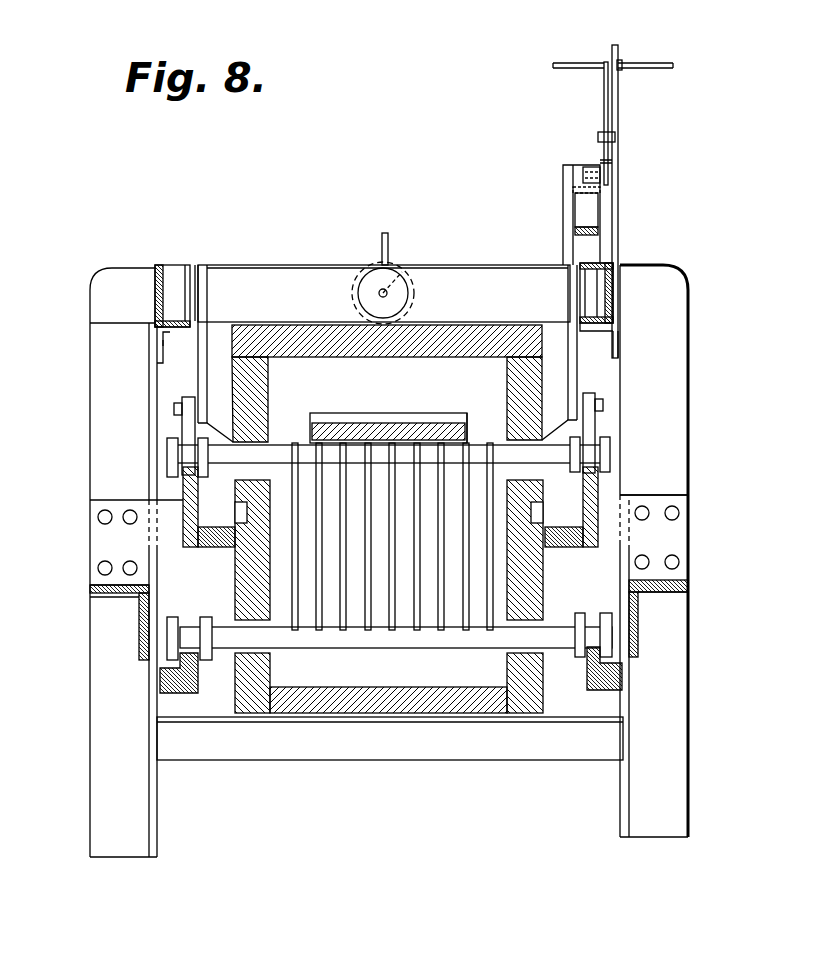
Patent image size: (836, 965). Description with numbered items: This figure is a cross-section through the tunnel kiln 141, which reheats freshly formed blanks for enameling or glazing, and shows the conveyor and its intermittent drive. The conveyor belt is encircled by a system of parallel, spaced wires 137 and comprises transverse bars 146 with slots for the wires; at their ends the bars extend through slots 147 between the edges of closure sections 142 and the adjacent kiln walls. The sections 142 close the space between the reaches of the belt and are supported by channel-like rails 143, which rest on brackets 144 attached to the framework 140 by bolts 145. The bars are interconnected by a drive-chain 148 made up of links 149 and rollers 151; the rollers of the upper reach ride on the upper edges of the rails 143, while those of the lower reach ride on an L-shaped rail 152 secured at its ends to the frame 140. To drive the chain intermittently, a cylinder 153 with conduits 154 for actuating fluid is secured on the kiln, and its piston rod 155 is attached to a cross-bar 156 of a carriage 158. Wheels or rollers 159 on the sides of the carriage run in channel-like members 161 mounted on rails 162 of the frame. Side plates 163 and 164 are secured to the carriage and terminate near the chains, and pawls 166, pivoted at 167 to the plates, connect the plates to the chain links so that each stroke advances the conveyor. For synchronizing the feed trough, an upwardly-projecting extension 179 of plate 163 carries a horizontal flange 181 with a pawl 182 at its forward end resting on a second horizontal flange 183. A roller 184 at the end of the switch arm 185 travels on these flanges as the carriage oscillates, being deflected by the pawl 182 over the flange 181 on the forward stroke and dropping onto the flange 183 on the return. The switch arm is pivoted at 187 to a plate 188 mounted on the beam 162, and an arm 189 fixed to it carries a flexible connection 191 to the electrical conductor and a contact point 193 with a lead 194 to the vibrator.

The wires 137 is at (290, 598).
The framework 140 is at (689, 594).
The tunnel kiln 141 is at (296, 703).
The sections 142 is at (192, 492).
The channel-like rails 143 is at (201, 546).
The brackets 144 is at (120, 542).
The bolts 145 is at (104, 566).
The transverse bars 146 is at (492, 448).
The slots 147 is at (272, 440).
The drive-chain 148 is at (604, 450).
The links 149 is at (182, 452).
The rollers 151 is at (186, 452).
The rail 152 is at (168, 684).
The cylinder 153 is at (395, 262).
The conduits 154 is at (385, 232).
The piston rod 155 is at (415, 288).
The cross-bar 156 is at (328, 278).
The carriage 158 is at (272, 265).
The wheels or rollers 159 is at (170, 265).
The channel-like members 161 is at (187, 262).
The rails 162 is at (160, 347).
The side plate 163 is at (572, 369).
The side plate 164 is at (196, 365).
The pawls 166 is at (186, 424).
The pivot 167 is at (175, 409).
The upwardly-projecting extension 179 is at (565, 172).
The horizontal flange 181 is at (580, 186).
The pawl 182 is at (590, 210).
The second horizontal flange 183 is at (599, 232).
The roller 184 is at (590, 168).
The switch arm 185 is at (609, 161).
The pivot 187 is at (600, 135).
The plate 188 is at (618, 98).
The arm 189 is at (605, 88).
The flexible connection 191 is at (556, 63).
The contact point 193 is at (622, 65).
The lead 194 is at (670, 65).